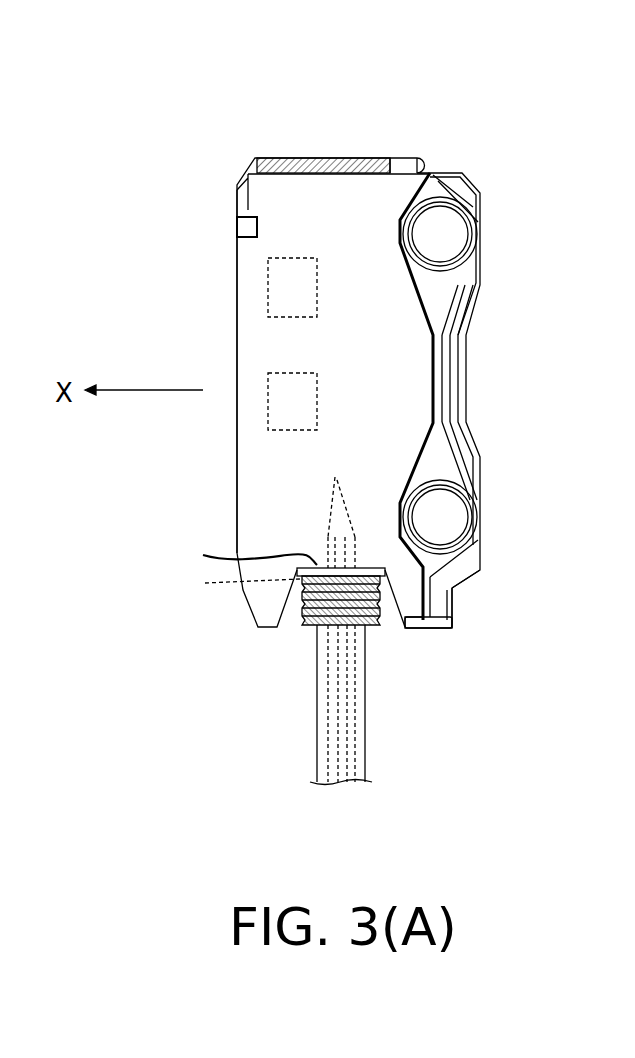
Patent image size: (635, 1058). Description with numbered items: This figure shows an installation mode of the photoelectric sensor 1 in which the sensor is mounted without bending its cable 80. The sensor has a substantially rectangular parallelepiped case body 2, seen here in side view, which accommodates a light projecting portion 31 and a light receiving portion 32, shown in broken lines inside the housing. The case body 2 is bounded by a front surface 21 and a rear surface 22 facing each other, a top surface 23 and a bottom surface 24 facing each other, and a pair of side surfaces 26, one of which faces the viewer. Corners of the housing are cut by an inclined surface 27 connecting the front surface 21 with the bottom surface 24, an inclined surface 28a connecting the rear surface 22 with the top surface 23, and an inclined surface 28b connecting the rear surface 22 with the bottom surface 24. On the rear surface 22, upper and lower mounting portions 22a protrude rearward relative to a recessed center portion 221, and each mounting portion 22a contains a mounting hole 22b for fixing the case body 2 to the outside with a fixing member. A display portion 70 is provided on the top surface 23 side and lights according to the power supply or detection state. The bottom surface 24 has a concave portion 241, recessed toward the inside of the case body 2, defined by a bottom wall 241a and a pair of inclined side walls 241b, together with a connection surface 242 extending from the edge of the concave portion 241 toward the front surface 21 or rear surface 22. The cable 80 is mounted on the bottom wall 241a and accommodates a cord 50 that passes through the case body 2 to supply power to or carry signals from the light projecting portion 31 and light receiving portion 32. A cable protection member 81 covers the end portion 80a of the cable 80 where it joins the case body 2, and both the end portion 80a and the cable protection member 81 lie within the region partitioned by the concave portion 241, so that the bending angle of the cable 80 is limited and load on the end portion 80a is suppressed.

The photoelectric sensor 1 is at (377, 73).
The case body 2 is at (203, 178).
The front surface 21 is at (237, 307).
The rear surface 22 is at (485, 280).
The mounting portion 22a is at (443, 298).
The mounting hole 22b is at (442, 236).
The center portion 221 is at (468, 383).
The top surface 23 is at (432, 172).
The bottom surface 24 is at (430, 688).
The concave portion 241 is at (135, 542).
The bottom wall 241a is at (227, 556).
The side wall 241b is at (219, 594).
The connection surface 242 is at (270, 630).
The side surface 26 is at (273, 458).
The inclined surface 27 is at (245, 592).
The inclined surface 28a is at (470, 182).
The inclined surface 28b is at (457, 605).
The light projecting portion 31 is at (268, 278).
The light receiving portion 32 is at (268, 398).
The cord 50 is at (341, 505).
The display portion 70 is at (322, 157).
The cable 80 is at (320, 797).
The end portion 80a is at (320, 635).
The cable protection member 81 is at (320, 633).